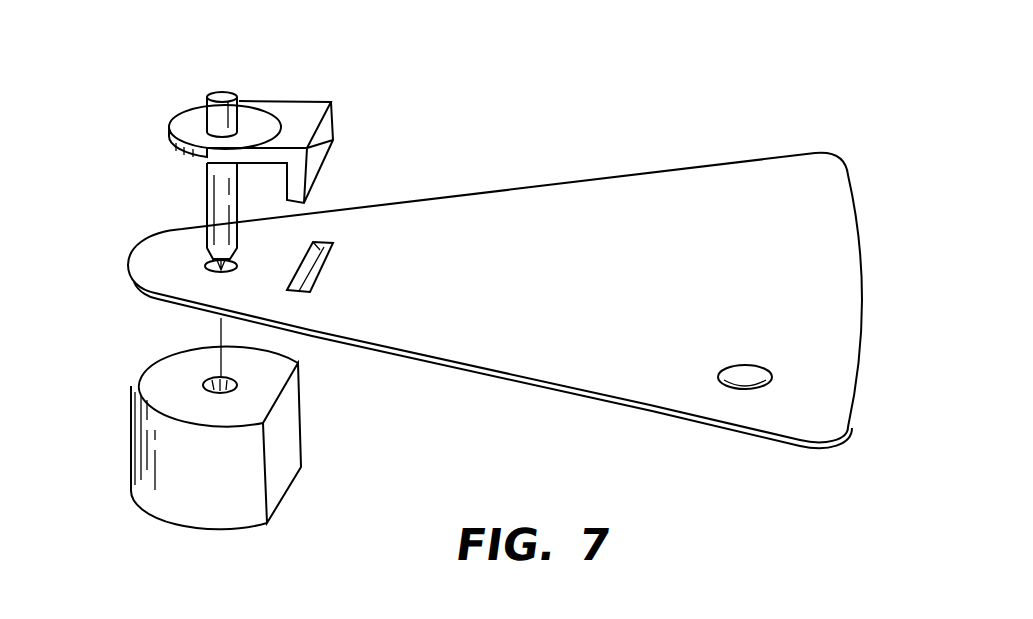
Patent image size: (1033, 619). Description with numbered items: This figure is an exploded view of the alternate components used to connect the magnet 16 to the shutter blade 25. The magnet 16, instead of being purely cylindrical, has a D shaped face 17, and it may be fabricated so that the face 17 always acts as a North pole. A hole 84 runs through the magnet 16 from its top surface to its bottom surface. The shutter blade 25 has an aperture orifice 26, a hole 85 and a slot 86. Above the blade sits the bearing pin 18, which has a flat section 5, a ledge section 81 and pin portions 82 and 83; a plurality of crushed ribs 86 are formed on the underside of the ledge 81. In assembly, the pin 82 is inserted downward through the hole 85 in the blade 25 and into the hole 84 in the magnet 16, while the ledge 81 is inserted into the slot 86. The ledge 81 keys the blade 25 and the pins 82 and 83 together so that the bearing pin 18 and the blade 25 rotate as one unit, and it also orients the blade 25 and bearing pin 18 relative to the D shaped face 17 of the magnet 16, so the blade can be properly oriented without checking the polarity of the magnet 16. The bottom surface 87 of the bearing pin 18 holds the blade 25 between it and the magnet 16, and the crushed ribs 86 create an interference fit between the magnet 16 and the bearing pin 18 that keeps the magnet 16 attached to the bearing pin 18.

The flat section 5 is at (319, 105).
The magnet 16 is at (131, 408).
The D shaped face 17 is at (280, 447).
The bearing pin 18 is at (170, 122).
The shutter blade 25 is at (627, 193).
The aperture orifice 26 is at (748, 375).
The ledge section 81 is at (322, 153).
The pin portion 82 is at (215, 195).
The pin portion 83 is at (246, 105).
The hole 84 is at (213, 378).
The hole 85 is at (205, 258).
The slot 86 is at (318, 241).
The bottom surface 87 is at (183, 157).